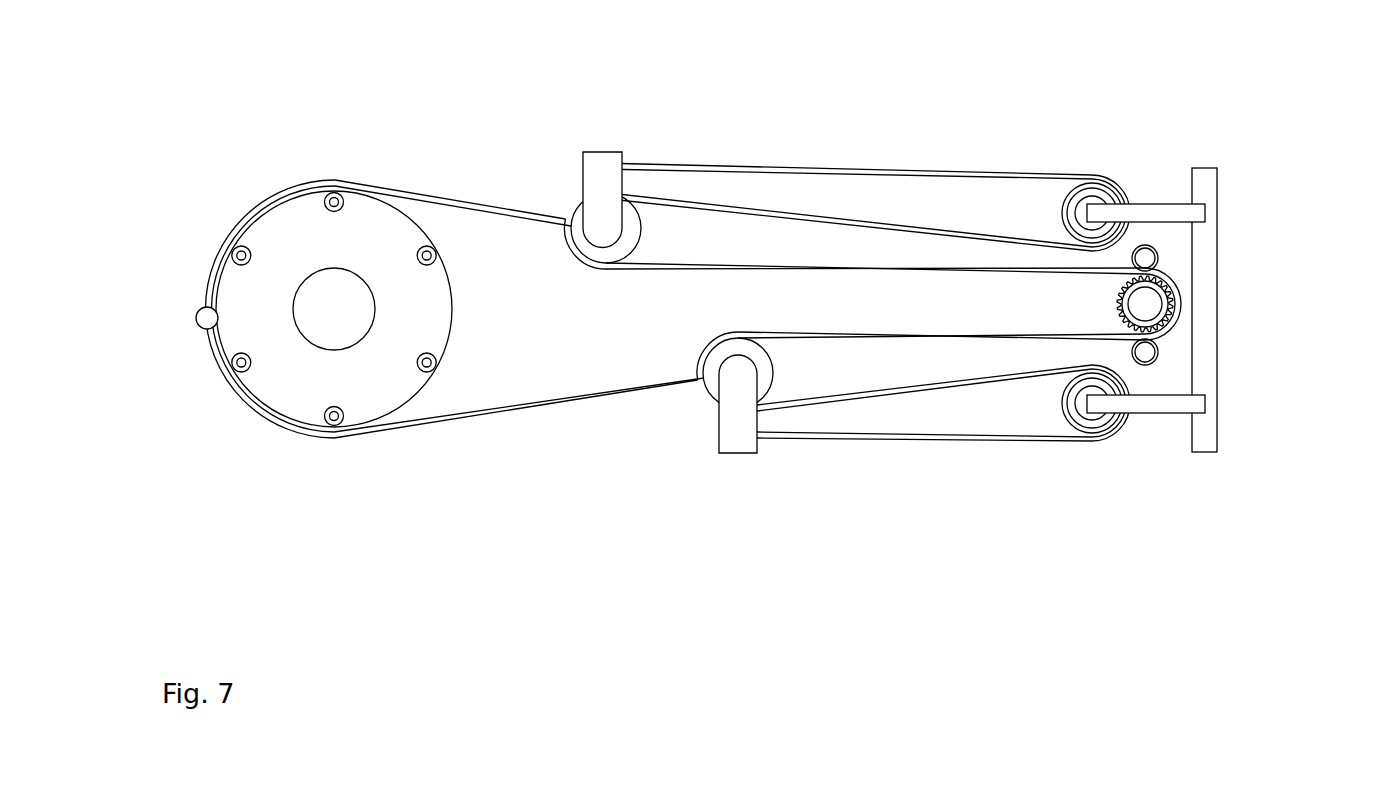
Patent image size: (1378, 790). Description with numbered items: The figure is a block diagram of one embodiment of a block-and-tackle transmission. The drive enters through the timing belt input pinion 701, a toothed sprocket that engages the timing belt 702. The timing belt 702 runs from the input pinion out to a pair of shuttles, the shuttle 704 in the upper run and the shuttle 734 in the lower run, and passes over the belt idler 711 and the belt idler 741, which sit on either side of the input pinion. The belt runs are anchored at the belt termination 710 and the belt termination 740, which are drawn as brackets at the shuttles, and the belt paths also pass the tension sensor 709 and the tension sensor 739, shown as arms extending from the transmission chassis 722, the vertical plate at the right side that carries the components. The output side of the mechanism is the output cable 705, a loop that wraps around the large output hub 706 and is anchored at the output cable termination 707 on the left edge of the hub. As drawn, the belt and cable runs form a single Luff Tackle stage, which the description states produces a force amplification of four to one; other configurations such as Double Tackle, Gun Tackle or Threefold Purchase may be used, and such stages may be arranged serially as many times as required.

The timing belt input pinion 701 is at (1166, 287).
The timing belt 702 is at (908, 268).
The shuttle 704 is at (630, 233).
The output cable 705 is at (482, 415).
The output hub 706 is at (335, 245).
The output cable termination 707 is at (207, 318).
The tension sensor 709 is at (1158, 220).
The belt termination 710 is at (600, 170).
The belt idler 711 is at (1158, 259).
The transmission chassis 722 is at (1202, 183).
The shuttle 734 is at (768, 372).
The tension sensor 739 is at (1163, 403).
The belt termination 740 is at (728, 432).
The belt idler 741 is at (1160, 358).